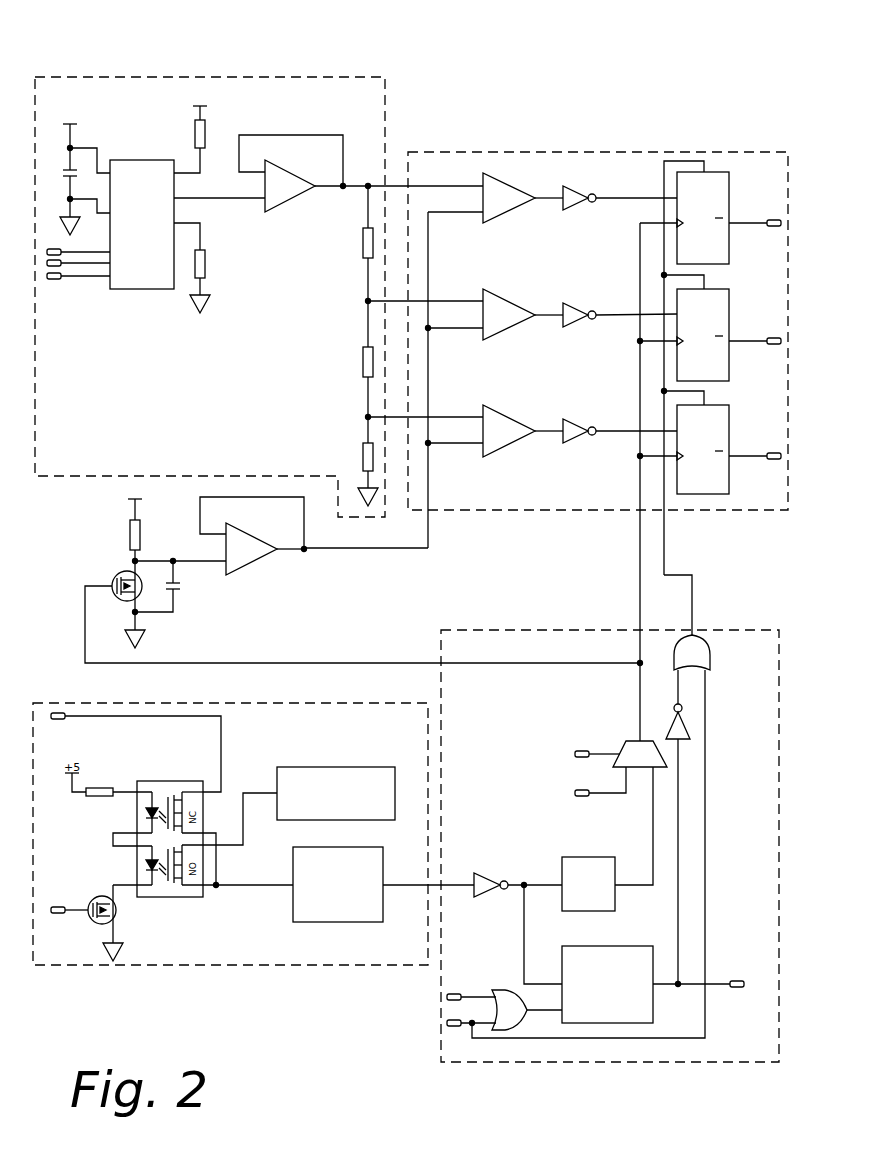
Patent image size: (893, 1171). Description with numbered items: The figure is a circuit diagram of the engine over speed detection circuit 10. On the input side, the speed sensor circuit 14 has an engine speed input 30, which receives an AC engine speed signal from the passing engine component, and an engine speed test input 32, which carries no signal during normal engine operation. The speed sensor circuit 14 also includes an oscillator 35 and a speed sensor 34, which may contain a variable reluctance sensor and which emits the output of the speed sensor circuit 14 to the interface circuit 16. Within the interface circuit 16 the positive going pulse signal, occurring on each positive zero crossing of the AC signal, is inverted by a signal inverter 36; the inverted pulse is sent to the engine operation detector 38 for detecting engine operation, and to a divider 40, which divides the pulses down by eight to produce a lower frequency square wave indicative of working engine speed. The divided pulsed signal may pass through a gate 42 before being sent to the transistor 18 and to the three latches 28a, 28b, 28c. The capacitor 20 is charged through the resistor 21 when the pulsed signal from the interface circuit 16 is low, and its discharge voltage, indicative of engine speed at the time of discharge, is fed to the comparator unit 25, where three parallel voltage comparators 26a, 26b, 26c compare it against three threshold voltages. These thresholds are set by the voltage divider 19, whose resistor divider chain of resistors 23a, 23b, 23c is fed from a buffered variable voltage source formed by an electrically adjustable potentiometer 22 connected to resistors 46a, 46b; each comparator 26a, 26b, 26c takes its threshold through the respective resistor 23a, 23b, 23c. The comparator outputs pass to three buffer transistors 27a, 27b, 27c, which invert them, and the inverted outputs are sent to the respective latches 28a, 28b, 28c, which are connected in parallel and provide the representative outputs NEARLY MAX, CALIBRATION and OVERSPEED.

The engine over speed detection circuit 10 is at (514, 66).
The speed sensor circuit 14 is at (283, 965).
The interface circuit 16 is at (690, 1064).
The transistor 18 is at (114, 578).
The voltage divider 19 is at (300, 77).
The capacitor 20 is at (178, 595).
The resistor 21 is at (140, 520).
The electrically adjustable potentiometer 22 is at (140, 160).
The resistor 23a is at (363, 455).
The resistor 23b is at (363, 362).
The resistor 23c is at (363, 243).
The comparator unit 25 is at (652, 152).
The voltage comparator 26a is at (510, 447).
The voltage comparator 26b is at (508, 312).
The voltage comparator 26c is at (508, 185).
The buffer transistor 27a is at (580, 442).
The buffer transistor 27b is at (577, 305).
The buffer transistor 27c is at (578, 186).
The latch 28a is at (720, 496).
The latch 28b is at (720, 292).
The latch 28c is at (720, 174).
The engine speed input 30 is at (55, 713).
The engine speed test input 32 is at (57, 920).
The speed sensor 34 is at (298, 905).
The oscillator 35 is at (330, 785).
The signal inverter 36 is at (488, 897).
The engine operation detector 38 is at (605, 1022).
The divider 40 is at (585, 875).
The gate 42 is at (622, 748).
The resistor 46a is at (205, 263).
The resistor 46b is at (205, 133).